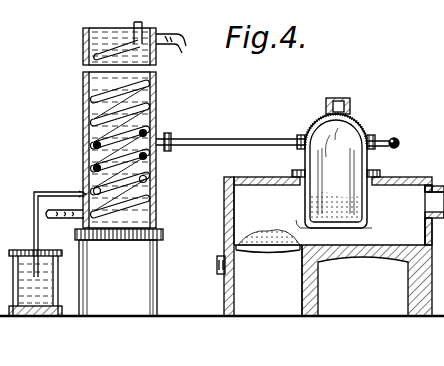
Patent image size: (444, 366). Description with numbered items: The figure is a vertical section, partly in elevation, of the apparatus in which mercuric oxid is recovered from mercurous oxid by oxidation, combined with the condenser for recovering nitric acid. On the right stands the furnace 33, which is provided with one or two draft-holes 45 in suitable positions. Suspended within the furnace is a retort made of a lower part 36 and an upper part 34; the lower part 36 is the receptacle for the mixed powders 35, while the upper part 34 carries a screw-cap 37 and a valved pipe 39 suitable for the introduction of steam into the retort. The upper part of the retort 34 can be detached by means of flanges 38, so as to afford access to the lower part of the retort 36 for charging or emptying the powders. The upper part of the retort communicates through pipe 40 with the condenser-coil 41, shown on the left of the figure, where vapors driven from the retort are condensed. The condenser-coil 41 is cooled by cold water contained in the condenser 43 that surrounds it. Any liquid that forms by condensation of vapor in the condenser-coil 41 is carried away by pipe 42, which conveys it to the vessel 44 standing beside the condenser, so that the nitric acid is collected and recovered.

The furnace 33 is at (425, 232).
The upper part of the retort 34 is at (309, 123).
The mixed powders 35 is at (336, 206).
The lower part of the retort 36 is at (304, 197).
The screw-cap 37 is at (356, 97).
The flanges 38 is at (173, 134).
The pipe 39 is at (382, 129).
The pipe 40 is at (235, 138).
The condenser-coil 41 is at (83, 90).
The pipe 42 is at (36, 193).
The condenser 43 is at (83, 104).
The vessel 44 is at (24, 250).
The draft-holes 45 is at (220, 262).